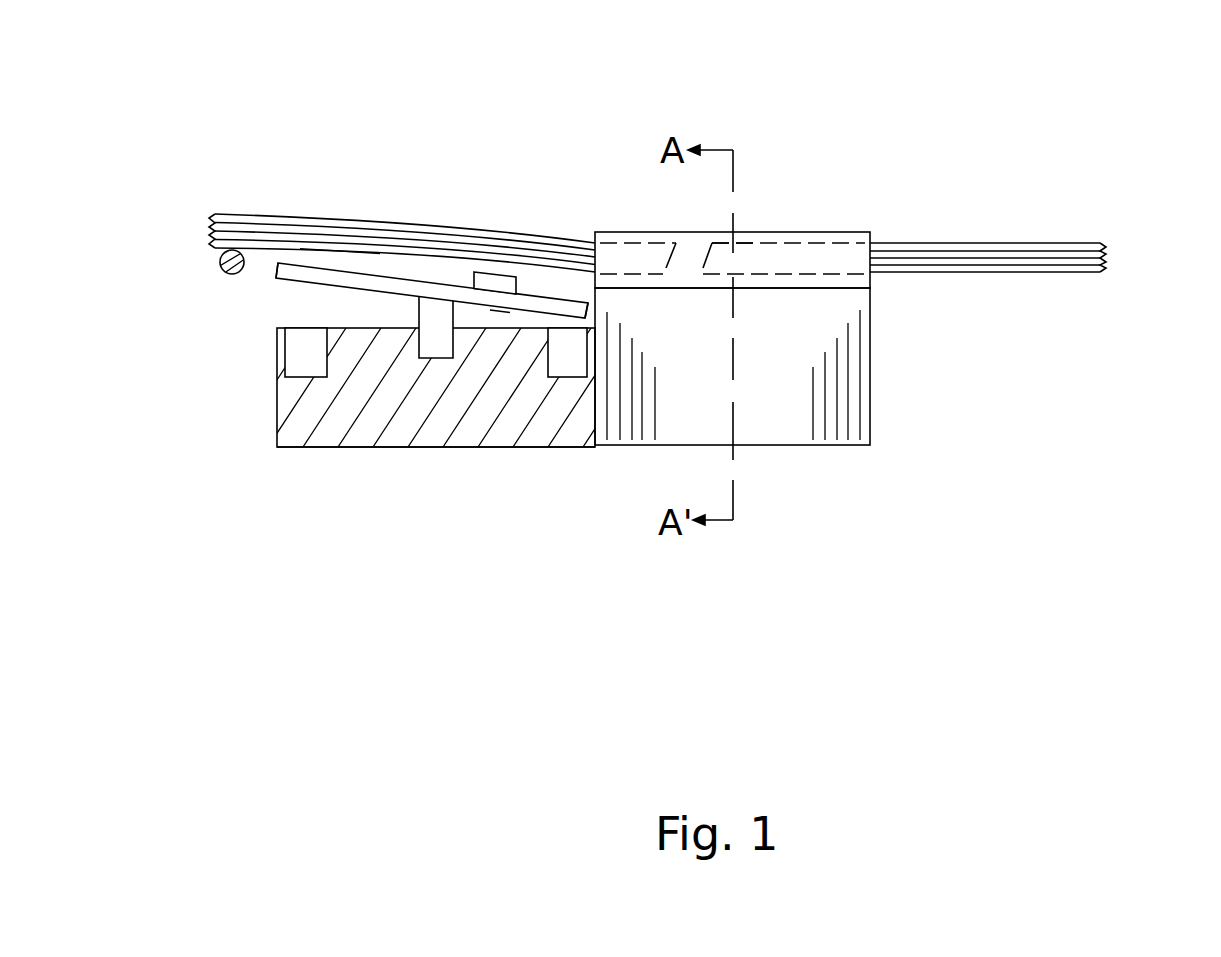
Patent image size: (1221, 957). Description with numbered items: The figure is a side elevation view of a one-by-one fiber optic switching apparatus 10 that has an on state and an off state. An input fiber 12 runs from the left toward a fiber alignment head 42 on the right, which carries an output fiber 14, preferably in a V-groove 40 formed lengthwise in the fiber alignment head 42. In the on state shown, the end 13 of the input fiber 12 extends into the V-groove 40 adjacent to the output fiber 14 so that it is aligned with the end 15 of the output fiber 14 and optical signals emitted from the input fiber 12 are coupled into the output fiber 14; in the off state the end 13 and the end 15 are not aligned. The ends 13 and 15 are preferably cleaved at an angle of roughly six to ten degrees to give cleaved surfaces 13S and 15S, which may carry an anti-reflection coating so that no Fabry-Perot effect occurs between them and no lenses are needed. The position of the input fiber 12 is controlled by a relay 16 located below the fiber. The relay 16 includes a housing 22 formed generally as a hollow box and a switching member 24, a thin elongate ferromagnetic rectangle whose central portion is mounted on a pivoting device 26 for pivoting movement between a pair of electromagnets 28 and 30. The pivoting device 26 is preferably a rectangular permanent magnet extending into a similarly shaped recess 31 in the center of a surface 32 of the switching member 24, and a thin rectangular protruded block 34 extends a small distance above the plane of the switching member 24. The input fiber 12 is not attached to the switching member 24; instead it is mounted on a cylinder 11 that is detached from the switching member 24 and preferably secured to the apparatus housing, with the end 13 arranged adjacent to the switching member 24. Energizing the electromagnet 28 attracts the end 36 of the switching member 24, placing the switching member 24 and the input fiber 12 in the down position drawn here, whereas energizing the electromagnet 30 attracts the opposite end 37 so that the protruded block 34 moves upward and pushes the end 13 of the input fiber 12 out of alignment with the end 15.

The fiber optic switching apparatus 10 is at (1014, 155).
The cylinder 11 is at (220, 262).
The input fiber 12 is at (240, 213).
The end of input fiber 13 is at (636, 243).
The cleaved surface 13S is at (672, 266).
The output fiber 14 is at (1045, 243).
The end of output fiber 15 is at (742, 243).
The cleaved surface 15S is at (707, 262).
The relay 16 is at (520, 447).
The housing 22 is at (278, 405).
The switching member 24 is at (355, 265).
The pivoting device 26 is at (432, 358).
The electromagnet 28 is at (560, 377).
The electromagnet 30 is at (283, 340).
The recess 31 is at (420, 288).
The surface of switching member 32 is at (500, 310).
The protruded block 34 is at (492, 272).
The end of switching member 36 is at (583, 300).
The end of switching member 37 is at (286, 264).
The V-groove 40 is at (855, 232).
The fiber alignment head 42 is at (766, 395).